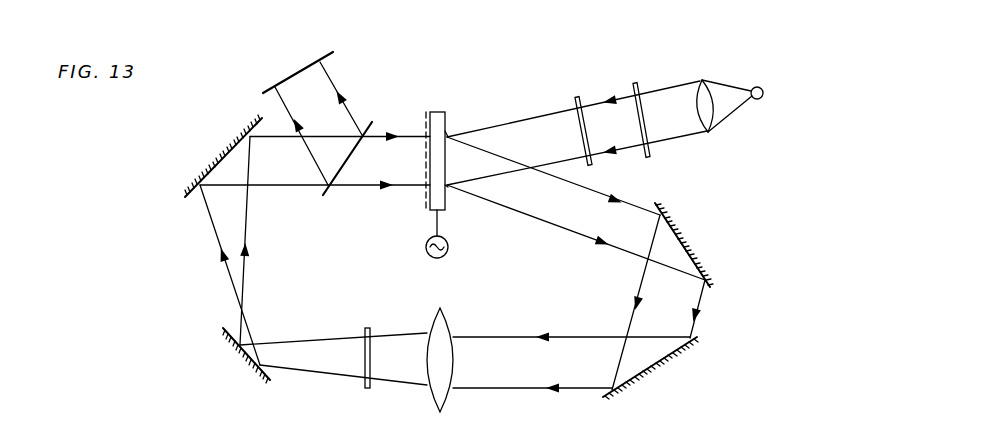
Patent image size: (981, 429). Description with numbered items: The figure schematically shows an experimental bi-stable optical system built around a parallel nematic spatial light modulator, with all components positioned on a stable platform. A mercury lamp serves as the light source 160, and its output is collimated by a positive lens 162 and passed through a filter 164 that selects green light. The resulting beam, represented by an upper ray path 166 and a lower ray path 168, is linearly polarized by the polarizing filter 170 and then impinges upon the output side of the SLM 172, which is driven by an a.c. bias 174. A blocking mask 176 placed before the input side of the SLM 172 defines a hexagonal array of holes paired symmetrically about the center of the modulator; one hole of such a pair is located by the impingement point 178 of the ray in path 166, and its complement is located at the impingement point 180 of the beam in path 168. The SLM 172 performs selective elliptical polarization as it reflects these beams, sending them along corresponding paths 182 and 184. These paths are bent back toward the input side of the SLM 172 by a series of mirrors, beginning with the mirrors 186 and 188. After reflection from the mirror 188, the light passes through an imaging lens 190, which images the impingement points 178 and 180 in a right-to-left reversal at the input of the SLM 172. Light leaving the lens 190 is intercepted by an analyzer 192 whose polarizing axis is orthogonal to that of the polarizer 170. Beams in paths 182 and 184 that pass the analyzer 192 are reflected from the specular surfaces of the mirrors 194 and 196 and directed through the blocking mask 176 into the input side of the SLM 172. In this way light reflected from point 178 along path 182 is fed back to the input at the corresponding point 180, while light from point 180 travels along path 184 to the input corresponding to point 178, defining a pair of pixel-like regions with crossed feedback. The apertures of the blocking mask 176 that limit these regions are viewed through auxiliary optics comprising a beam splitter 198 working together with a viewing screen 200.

The light source 160 is at (761, 98).
The positive lens 162 is at (711, 133).
The filter 164 is at (640, 83).
The upper ray path 166 is at (567, 112).
The lower ray path 168 is at (618, 152).
The polarizing filter 170 is at (581, 98).
The spatial light modulator 172 is at (436, 112).
The a.c. bias 174 is at (447, 251).
The blocking mask 176 is at (427, 117).
The impingement point 178 is at (449, 133).
The impingement point 180 is at (447, 187).
The path 182 is at (352, 188).
The path 184 is at (350, 135).
The mirror 186 is at (700, 248).
The mirror 188 is at (688, 347).
The imaging lens 190 is at (445, 320).
The analyzer 192 is at (365, 333).
The mirror 194 is at (242, 360).
The mirror 196 is at (212, 163).
The beam splitter 198 is at (350, 158).
The viewing screen 200 is at (308, 67).